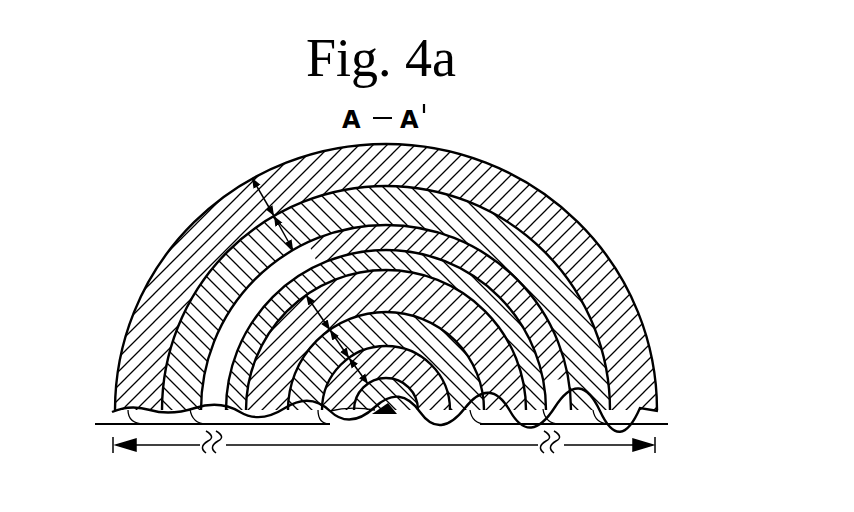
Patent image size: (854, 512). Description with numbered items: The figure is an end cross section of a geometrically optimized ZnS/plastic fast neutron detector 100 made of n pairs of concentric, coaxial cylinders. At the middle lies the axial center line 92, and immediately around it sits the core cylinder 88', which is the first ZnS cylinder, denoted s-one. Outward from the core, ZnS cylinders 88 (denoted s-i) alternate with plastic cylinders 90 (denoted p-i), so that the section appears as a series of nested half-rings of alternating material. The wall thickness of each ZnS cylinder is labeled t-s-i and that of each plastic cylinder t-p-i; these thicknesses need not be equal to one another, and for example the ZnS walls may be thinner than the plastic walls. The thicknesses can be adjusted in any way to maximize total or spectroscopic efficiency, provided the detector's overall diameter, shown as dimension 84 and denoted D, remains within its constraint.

The geometrically optimized ZnS/plastic fast neutron detector 100 is at (640, 268).
The plastic cylinders 90 is at (191, 429).
The ZnS cylinders 88 is at (589, 427).
The core cylinder 88' is at (398, 425).
The axial center line 92 is at (385, 413).
The dimension D 84 is at (466, 447).